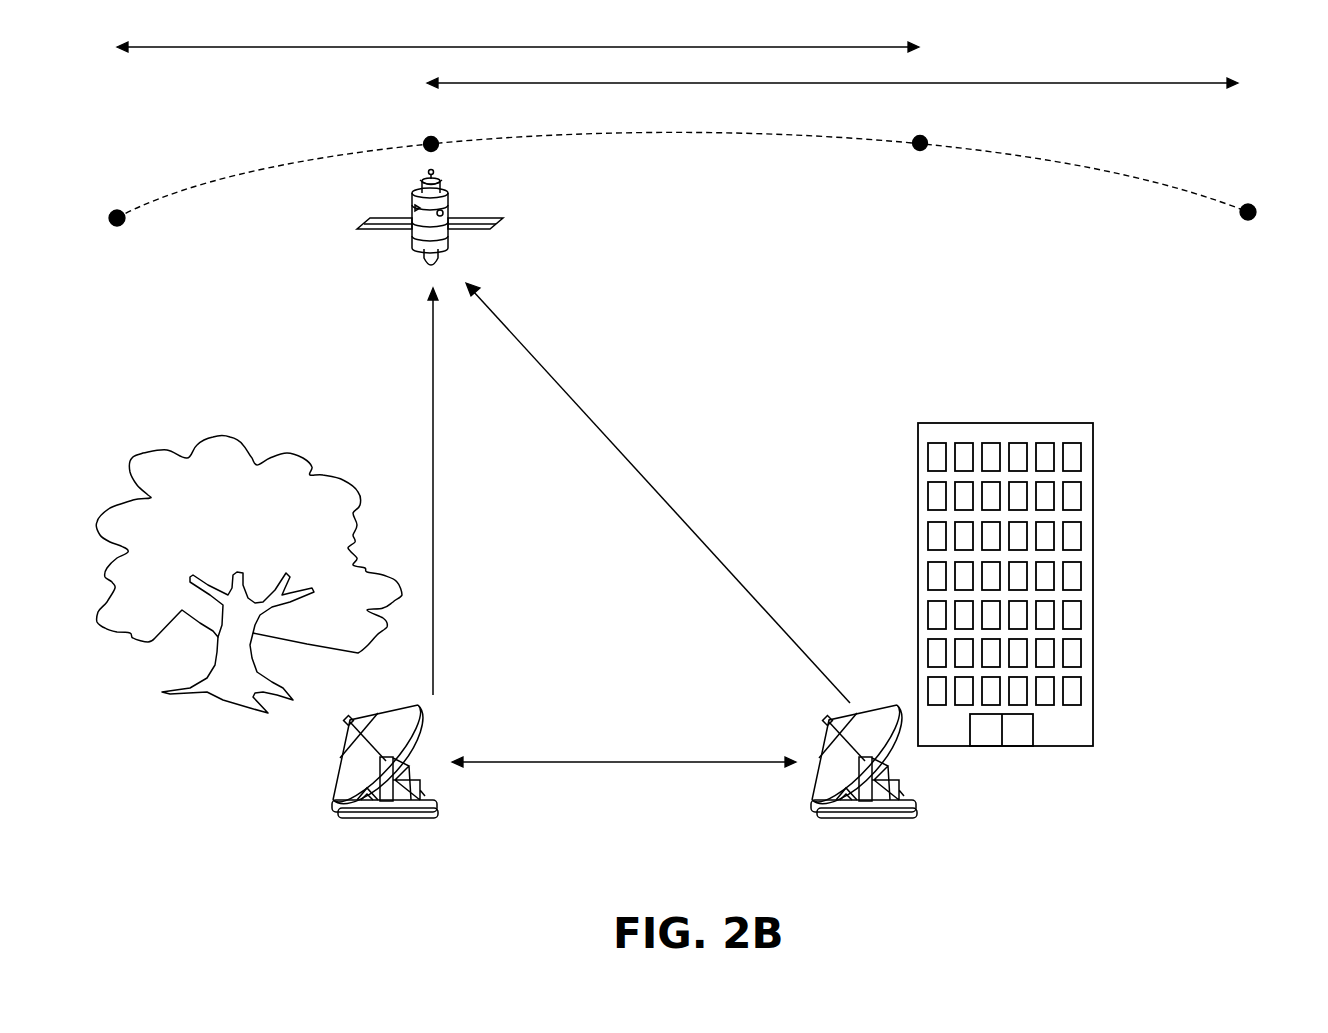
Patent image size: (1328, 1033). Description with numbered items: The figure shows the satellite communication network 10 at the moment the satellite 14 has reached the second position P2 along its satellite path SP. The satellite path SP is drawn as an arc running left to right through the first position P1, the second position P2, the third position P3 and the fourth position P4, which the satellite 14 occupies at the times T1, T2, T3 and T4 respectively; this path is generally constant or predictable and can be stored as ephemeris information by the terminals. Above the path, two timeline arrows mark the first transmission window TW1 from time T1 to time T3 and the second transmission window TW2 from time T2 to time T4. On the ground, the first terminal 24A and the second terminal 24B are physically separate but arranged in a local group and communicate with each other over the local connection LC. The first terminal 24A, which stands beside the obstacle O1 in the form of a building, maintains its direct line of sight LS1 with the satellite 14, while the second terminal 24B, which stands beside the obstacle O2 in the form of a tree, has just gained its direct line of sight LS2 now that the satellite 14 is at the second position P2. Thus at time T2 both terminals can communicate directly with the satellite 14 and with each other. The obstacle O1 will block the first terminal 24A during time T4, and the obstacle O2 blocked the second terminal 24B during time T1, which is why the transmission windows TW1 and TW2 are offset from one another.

The satellite communication network 10 is at (1283, 345).
The satellite 14 is at (487, 231).
The first terminal 24A is at (895, 822).
The second terminal 24B is at (416, 822).
The obstacle O1 is at (1008, 750).
The obstacle O2 is at (218, 698).
The satellite path SP is at (857, 138).
The first position P1 is at (101, 218).
The second position P2 is at (430, 132).
The third position P3 is at (920, 129).
The fourth position P4 is at (1265, 212).
The time T1 is at (93, 47).
The time T2 is at (407, 83).
The time T3 is at (935, 47).
The time T4 is at (1254, 83).
The first transmission window TW1 is at (518, 40).
The second transmission window TW2 is at (832, 75).
The direct line of sight LS1 is at (658, 493).
The direct line of sight LS2 is at (448, 491).
The local connection LC is at (624, 776).